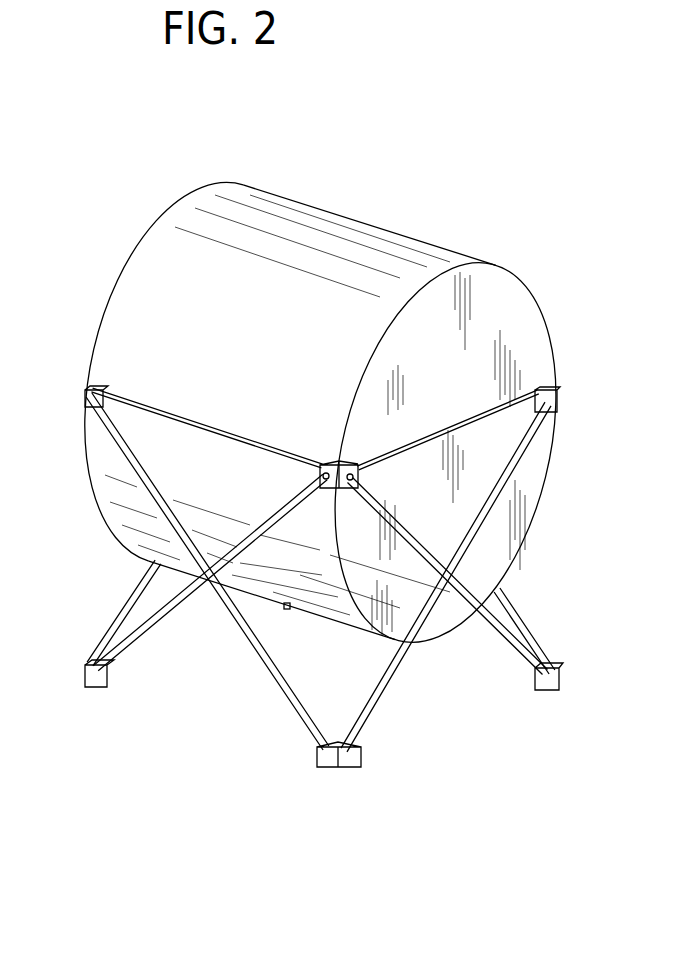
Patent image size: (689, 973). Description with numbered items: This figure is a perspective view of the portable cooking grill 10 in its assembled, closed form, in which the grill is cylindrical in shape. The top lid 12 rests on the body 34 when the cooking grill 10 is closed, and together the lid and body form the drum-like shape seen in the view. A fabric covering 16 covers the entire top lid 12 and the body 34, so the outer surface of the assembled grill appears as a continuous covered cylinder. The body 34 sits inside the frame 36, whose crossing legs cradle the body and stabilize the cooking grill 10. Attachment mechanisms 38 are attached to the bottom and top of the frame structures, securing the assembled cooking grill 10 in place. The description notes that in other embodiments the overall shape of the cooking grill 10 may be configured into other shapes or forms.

The cooking grill 10 is at (453, 164).
The top lid 12 is at (520, 316).
The fabric covering 16 is at (118, 313).
The body 34 is at (533, 497).
The frame 36 is at (532, 640).
The attachment mechanisms 38 is at (338, 767).